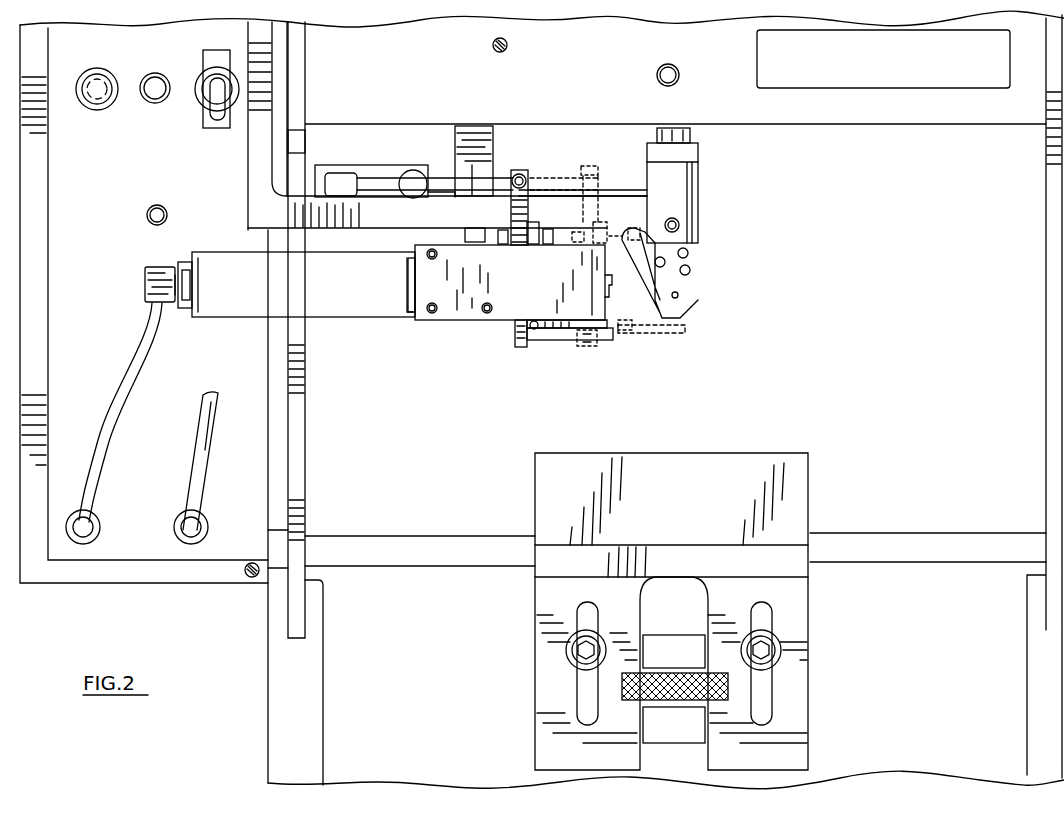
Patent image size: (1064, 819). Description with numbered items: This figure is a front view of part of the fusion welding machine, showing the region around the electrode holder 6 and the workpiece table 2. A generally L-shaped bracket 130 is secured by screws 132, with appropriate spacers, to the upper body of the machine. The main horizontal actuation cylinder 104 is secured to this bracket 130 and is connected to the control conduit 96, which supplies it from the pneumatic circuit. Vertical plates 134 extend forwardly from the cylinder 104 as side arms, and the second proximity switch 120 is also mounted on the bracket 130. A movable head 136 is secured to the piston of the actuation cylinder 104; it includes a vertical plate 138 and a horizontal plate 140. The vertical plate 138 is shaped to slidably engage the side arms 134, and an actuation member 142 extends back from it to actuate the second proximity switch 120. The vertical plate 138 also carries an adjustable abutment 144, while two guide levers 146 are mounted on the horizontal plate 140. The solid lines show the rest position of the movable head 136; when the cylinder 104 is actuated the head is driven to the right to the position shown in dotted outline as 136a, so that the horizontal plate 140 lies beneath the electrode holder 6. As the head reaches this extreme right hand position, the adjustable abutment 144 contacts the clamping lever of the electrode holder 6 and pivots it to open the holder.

The table 2 is at (533, 478).
The electrode holder 6 is at (698, 195).
The control conduit 96 is at (118, 437).
The main horizontal actuation cylinder 104 is at (345, 298).
The second proximity switch 120 is at (327, 165).
The bracket 130 is at (255, 194).
The screws 132 is at (249, 115).
The vertical plates 134 is at (440, 322).
The movable head 136 is at (525, 345).
The movable head in extreme right hand position 136a is at (645, 335).
The vertical plate 138 is at (512, 328).
The horizontal plate 140 is at (603, 340).
The actuation member 142 is at (443, 177).
The adjustable abutment 144 is at (543, 237).
The guide levers 146 is at (582, 348).